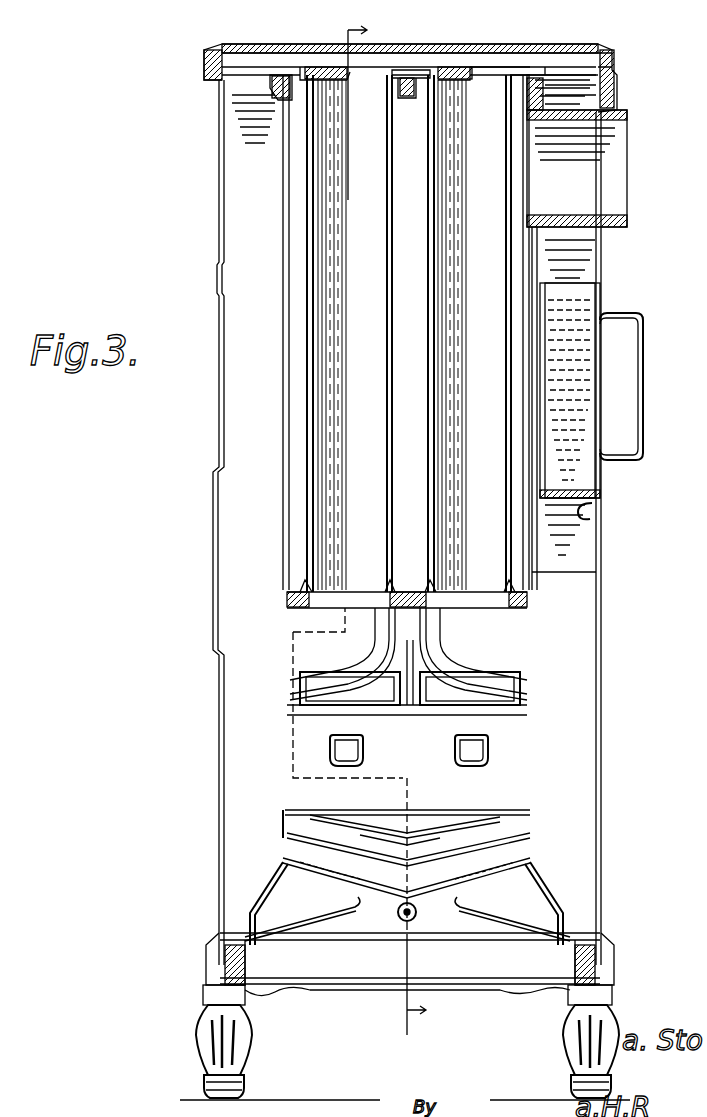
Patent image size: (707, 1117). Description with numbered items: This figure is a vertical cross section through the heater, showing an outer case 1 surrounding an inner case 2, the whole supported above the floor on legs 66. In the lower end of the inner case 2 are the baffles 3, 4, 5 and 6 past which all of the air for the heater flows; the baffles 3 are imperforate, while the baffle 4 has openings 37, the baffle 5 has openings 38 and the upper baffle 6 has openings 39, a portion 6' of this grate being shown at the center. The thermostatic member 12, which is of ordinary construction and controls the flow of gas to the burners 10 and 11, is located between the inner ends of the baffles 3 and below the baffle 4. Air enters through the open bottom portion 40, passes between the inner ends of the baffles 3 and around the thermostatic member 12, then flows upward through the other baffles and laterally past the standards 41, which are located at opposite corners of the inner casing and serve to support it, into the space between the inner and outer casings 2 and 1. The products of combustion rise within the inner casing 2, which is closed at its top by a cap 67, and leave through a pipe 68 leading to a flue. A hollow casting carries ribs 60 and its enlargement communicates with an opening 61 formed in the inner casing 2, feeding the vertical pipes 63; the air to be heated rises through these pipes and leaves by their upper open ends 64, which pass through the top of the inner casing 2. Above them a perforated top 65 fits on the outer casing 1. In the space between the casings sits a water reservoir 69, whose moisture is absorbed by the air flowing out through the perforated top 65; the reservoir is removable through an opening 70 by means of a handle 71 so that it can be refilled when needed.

The outer case 1 is at (600, 545).
The inner case 2 is at (620, 571).
The baffles 3 is at (407, 919).
The baffle 4 is at (287, 857).
The baffle 5 is at (287, 818).
The upper baffle 6 is at (405, 806).
The grate section 6' is at (440, 842).
The burner 10 is at (365, 750).
The burner 11 is at (490, 752).
The thermostatic member 12 is at (415, 913).
The openings 37 is at (402, 886).
The openings 38 is at (532, 818).
The openings 39 is at (495, 812).
The open bottom portion 40 is at (410, 964).
The standards 41 is at (550, 890).
The ribs 60 is at (432, 630).
The opening 61 is at (530, 663).
The vertical pipes 63 is at (340, 187).
The upper open ends 64 is at (428, 72).
The perforated top 65 is at (522, 36).
The legs 66 is at (565, 1030).
The cap 67 is at (296, 70).
The pipe 68 is at (628, 125).
The water reservoir 69 is at (587, 310).
The opening 70 is at (600, 520).
The handle 71 is at (648, 367).